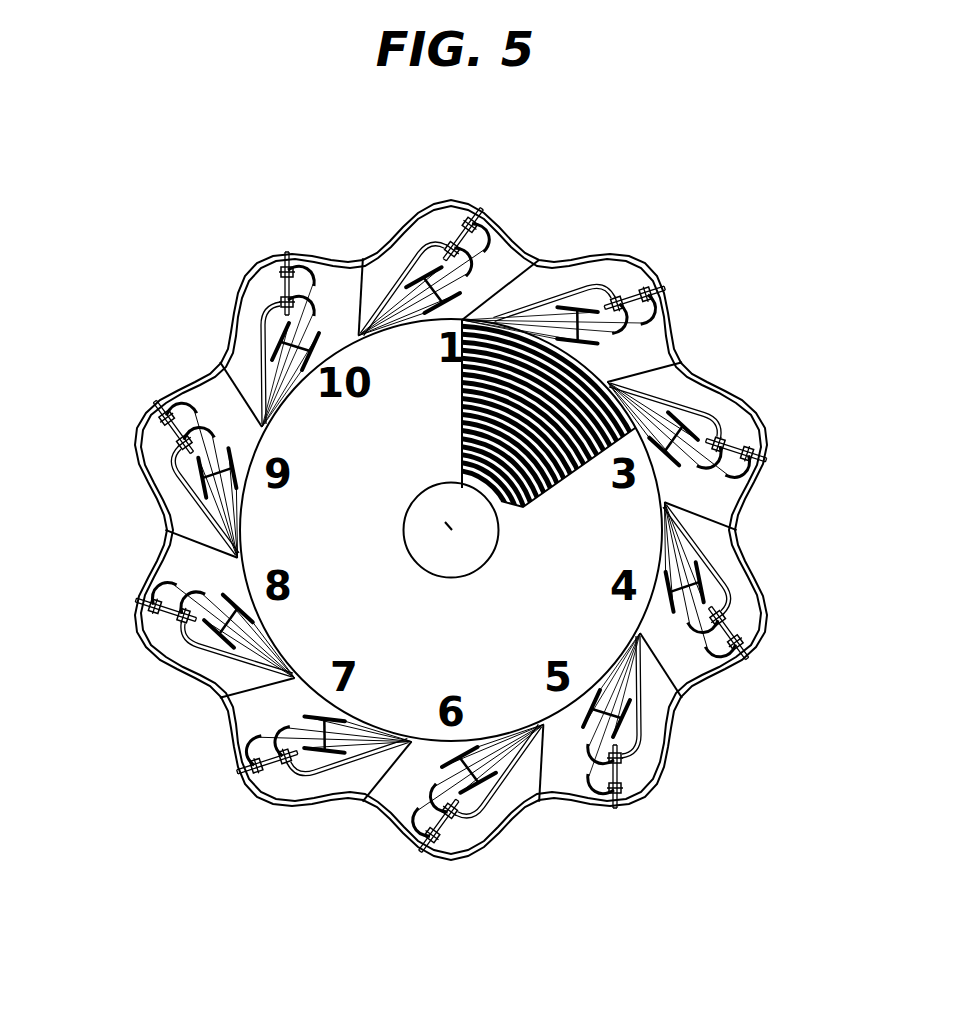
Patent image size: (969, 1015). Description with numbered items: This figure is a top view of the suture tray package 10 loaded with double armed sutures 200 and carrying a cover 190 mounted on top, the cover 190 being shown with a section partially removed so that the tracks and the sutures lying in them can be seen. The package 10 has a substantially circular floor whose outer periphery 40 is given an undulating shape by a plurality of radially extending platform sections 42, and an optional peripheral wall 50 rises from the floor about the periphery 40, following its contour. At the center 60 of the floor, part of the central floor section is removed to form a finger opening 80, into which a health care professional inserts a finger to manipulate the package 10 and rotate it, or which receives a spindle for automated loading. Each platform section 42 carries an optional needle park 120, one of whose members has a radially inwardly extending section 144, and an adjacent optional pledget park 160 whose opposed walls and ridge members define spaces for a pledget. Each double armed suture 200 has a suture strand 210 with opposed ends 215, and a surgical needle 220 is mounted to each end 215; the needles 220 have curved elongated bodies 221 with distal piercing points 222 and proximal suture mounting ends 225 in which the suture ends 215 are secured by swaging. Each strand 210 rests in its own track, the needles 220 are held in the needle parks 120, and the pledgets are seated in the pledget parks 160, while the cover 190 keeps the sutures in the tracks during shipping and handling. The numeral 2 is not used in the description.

The suture tray package 10 is at (300, 165).
The holder unit 2 is at (611, 289).
The outer periphery 40 is at (213, 677).
The platform section 42 is at (331, 272).
The peripheral wall 50 is at (175, 670).
The center 60 is at (452, 530).
The finger opening 80 is at (452, 530).
The needle park 120 is at (192, 428).
The inwardly extending section 144 is at (452, 833).
The pledget park 160 is at (657, 535).
The cover 190 is at (303, 553).
The double armed suture 200 is at (694, 413).
The suture strand 210 is at (560, 277).
The suture end 215 is at (738, 428).
The surgical needle 220 is at (750, 446).
The curved elongated body 221 is at (733, 471).
The distal piercing point 222 is at (727, 478).
The proximal suture mounting end 225 is at (742, 437).